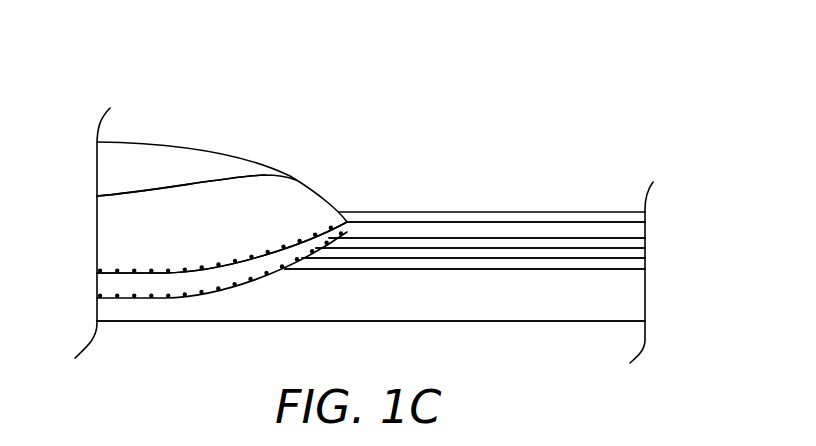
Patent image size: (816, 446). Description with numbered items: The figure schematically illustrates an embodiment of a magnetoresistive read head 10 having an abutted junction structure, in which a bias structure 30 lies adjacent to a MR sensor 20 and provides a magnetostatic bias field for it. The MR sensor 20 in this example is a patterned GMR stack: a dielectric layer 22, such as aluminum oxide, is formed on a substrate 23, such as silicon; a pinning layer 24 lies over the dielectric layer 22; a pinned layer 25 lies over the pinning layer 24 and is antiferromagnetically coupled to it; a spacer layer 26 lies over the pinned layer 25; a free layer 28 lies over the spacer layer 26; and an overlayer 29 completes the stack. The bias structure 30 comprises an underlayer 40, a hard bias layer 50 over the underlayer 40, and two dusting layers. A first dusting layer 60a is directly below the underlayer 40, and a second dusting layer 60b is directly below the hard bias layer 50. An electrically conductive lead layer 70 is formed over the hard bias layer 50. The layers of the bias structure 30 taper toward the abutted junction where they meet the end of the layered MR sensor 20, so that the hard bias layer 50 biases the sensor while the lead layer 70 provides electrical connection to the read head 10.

The magnetoresistive read head 10 is at (377, 77).
The MR sensor 20 is at (665, 138).
The bias structure 30 is at (83, 105).
The electrically conductive lead layer 70 is at (110, 170).
The hard bias layer 50 is at (112, 247).
The underlayer 40 is at (112, 287).
The first dusting layer 60a is at (148, 298).
The second dusting layer 60b is at (222, 265).
The overlayer 29 is at (628, 220).
The free layer 28 is at (625, 233).
The spacer layer 26 is at (625, 247).
The pinned layer 25 is at (625, 256).
The pinning layer 24 is at (625, 266).
The dielectric layer 22 is at (622, 307).
The substrate 23 is at (612, 343).